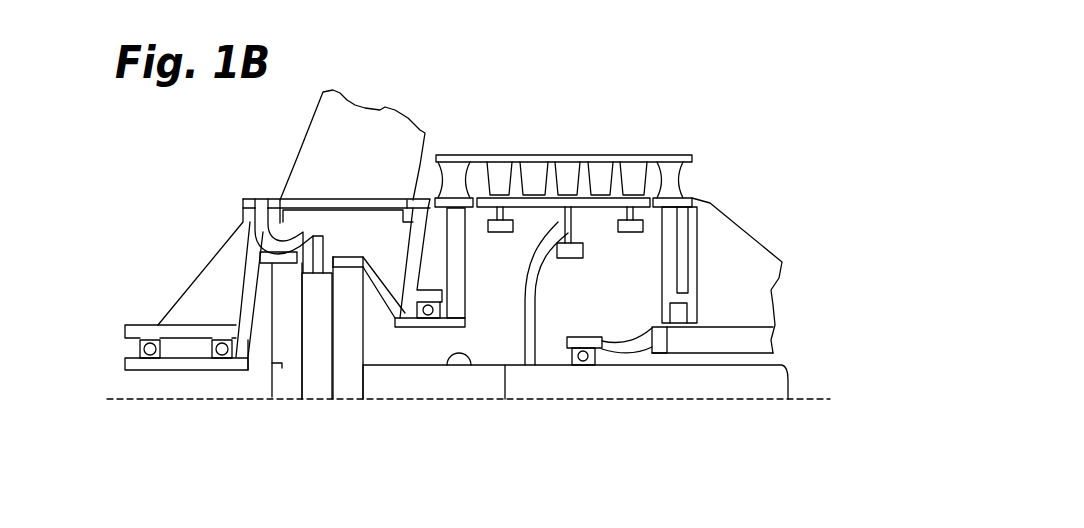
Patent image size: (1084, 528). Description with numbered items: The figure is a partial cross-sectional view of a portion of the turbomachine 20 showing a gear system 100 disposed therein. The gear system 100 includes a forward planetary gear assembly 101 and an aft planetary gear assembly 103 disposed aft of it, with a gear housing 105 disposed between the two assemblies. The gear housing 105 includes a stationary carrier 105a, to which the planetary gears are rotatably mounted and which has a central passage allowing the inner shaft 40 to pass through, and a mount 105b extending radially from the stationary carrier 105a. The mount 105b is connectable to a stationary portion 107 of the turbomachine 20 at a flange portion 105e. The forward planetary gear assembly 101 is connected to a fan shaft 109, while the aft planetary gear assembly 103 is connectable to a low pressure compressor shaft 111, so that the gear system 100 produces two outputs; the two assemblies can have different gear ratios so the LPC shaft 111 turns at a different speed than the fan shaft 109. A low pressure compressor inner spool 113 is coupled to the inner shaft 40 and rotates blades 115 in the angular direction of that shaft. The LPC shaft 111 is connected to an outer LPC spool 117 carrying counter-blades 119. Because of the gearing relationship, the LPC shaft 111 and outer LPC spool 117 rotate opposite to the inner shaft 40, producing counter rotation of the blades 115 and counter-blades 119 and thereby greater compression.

The turbomachine 20 is at (637, 98).
The inner shaft 40 is at (540, 382).
The gear system 100 is at (367, 348).
The forward planetary gear assembly 101 is at (280, 367).
The aft planetary gear assembly 103 is at (350, 390).
The gear housing 105 is at (318, 383).
The stationary carrier 105a is at (303, 373).
The mount 105b is at (310, 213).
The flange portion 105e is at (268, 207).
The stationary portion 107 is at (198, 287).
The fan shaft 109 is at (177, 367).
The low pressure compressor shaft 111 is at (356, 258).
The low pressure compressor inner spool 113 is at (524, 300).
The blades 115 is at (633, 178).
The outer LPC spool 117 is at (455, 155).
The counter-blades 119 is at (537, 170).